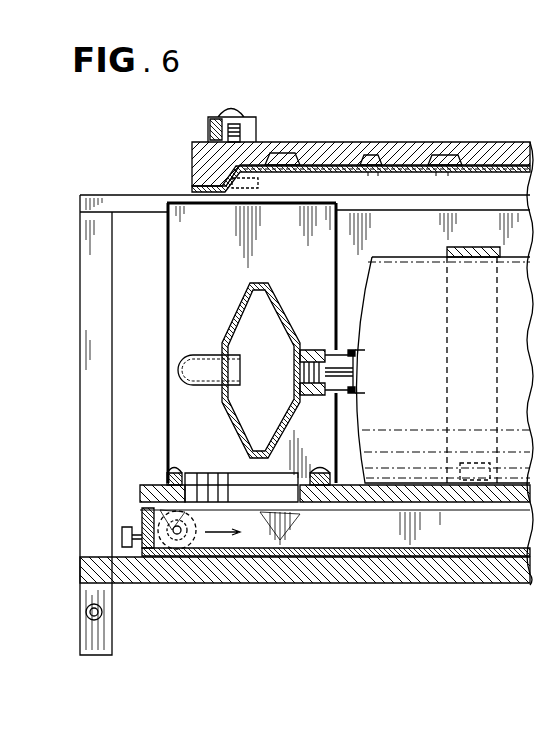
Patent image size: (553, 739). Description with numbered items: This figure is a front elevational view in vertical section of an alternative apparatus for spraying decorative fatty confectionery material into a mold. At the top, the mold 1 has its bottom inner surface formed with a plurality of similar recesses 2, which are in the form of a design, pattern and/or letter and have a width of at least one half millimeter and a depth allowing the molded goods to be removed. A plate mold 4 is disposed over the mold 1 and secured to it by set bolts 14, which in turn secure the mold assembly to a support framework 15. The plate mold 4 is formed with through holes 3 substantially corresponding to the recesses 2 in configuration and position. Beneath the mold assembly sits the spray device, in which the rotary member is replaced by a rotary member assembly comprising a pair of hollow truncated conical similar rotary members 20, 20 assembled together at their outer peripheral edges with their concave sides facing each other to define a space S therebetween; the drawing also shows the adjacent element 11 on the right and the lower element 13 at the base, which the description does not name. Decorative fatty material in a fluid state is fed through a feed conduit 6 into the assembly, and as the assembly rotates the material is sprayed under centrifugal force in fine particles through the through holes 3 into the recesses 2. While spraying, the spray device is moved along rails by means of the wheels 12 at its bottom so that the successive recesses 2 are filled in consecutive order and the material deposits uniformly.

The mold 1 is at (323, 150).
The recesses 2 is at (284, 156).
The through holes 3 is at (258, 165).
The plate mold 4 is at (505, 166).
The feed conduit 6 is at (196, 353).
The cylinder 11 is at (397, 268).
The wheels 12 is at (200, 548).
The base plate 13 is at (418, 540).
The set bolts 14 is at (212, 125).
The support framework 15 is at (133, 195).
The rotary members 20 is at (232, 322).
The space S is at (248, 405).